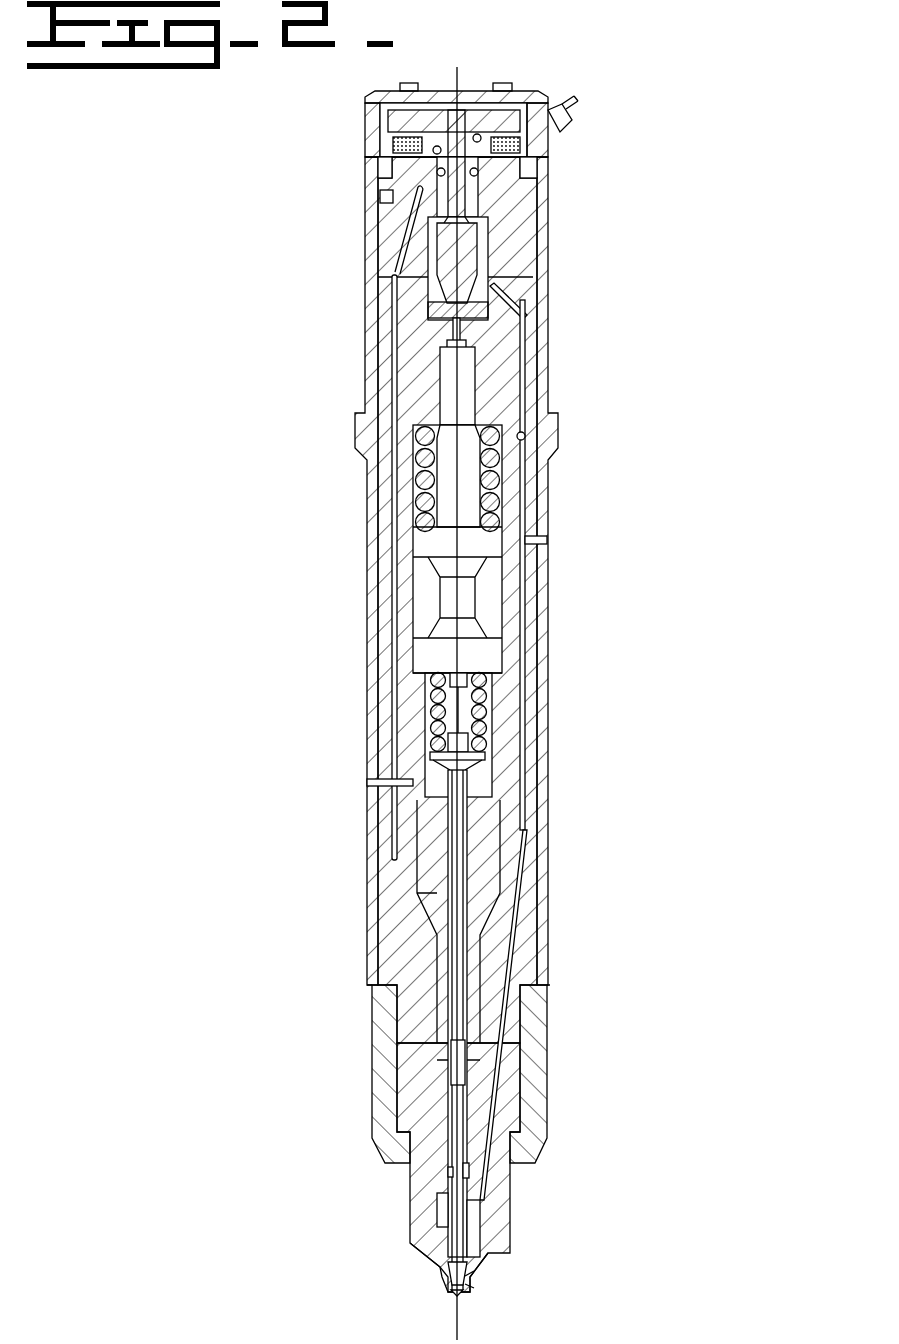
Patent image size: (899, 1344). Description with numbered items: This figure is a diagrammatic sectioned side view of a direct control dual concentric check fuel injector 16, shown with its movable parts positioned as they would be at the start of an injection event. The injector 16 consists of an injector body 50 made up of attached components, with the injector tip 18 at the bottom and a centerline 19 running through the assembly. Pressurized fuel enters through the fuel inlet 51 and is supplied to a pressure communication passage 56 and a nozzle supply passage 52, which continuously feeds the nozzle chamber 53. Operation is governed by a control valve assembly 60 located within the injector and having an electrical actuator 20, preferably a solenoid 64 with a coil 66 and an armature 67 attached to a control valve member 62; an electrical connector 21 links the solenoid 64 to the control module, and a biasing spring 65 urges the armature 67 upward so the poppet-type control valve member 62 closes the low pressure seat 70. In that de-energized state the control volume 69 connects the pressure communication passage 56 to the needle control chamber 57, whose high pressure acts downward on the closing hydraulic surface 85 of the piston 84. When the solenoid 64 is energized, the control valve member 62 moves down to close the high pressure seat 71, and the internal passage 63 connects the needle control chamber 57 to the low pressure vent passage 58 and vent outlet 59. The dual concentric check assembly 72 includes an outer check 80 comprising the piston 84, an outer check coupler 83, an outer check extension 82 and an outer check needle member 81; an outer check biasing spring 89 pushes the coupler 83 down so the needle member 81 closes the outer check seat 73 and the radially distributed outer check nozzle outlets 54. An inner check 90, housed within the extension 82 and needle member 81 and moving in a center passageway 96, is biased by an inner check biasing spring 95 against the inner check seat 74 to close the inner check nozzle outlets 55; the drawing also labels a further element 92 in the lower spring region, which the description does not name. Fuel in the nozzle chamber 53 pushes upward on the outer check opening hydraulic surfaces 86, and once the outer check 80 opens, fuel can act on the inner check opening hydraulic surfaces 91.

The fuel injector 16 is at (284, 869).
The injector tip 18 is at (455, 1297).
The centerline 19 is at (459, 1330).
The electrical actuator 20 is at (374, 117).
The electrical connector 21 is at (574, 118).
The injector body 50 is at (548, 600).
The fuel inlet 51 is at (547, 540).
The nozzle supply passage 52 is at (526, 857).
The nozzle chamber 53 is at (480, 1215).
The outer check nozzle outlets 54 is at (474, 1279).
The inner check nozzle outlets 55 is at (470, 1286).
The pressure communication passage 56 is at (526, 437).
The needle control chamber 57 is at (515, 330).
The vent passage 58 is at (400, 255).
The vent outlet 59 is at (370, 783).
The control valve assembly 60 is at (284, 357).
The control valve member 62 is at (478, 172).
The internal passage 63 is at (447, 245).
The solenoid 64 is at (550, 153).
The biasing spring 65 is at (386, 167).
The coil 66 is at (393, 141).
The armature 67 is at (530, 92).
The control volume 69 is at (488, 273).
The low pressure seat 70 is at (479, 232).
The high pressure seat 71 is at (428, 309).
The dual concentric check assembly 72 is at (421, 1177).
The outer check seat 73 is at (476, 1250).
The inner check seat 74 is at (447, 1267).
The outer check 80 is at (520, 1108).
The outer check needle member 81 is at (440, 1103).
The outer check extension 82 is at (417, 900).
The outer check coupler 83 is at (437, 590).
The piston 84 is at (447, 395).
The closing hydraulic surface 85 is at (446, 352).
The outer check opening hydraulic surfaces 86 is at (440, 1207).
The outer check biasing spring 89 is at (415, 476).
The inner check 90 is at (464, 1018).
The inner check opening hydraulic surfaces 91 is at (469, 1176).
The needle spring 92 is at (490, 683).
The inner check biasing spring 95 is at (435, 700).
The center passageway 96 is at (465, 985).